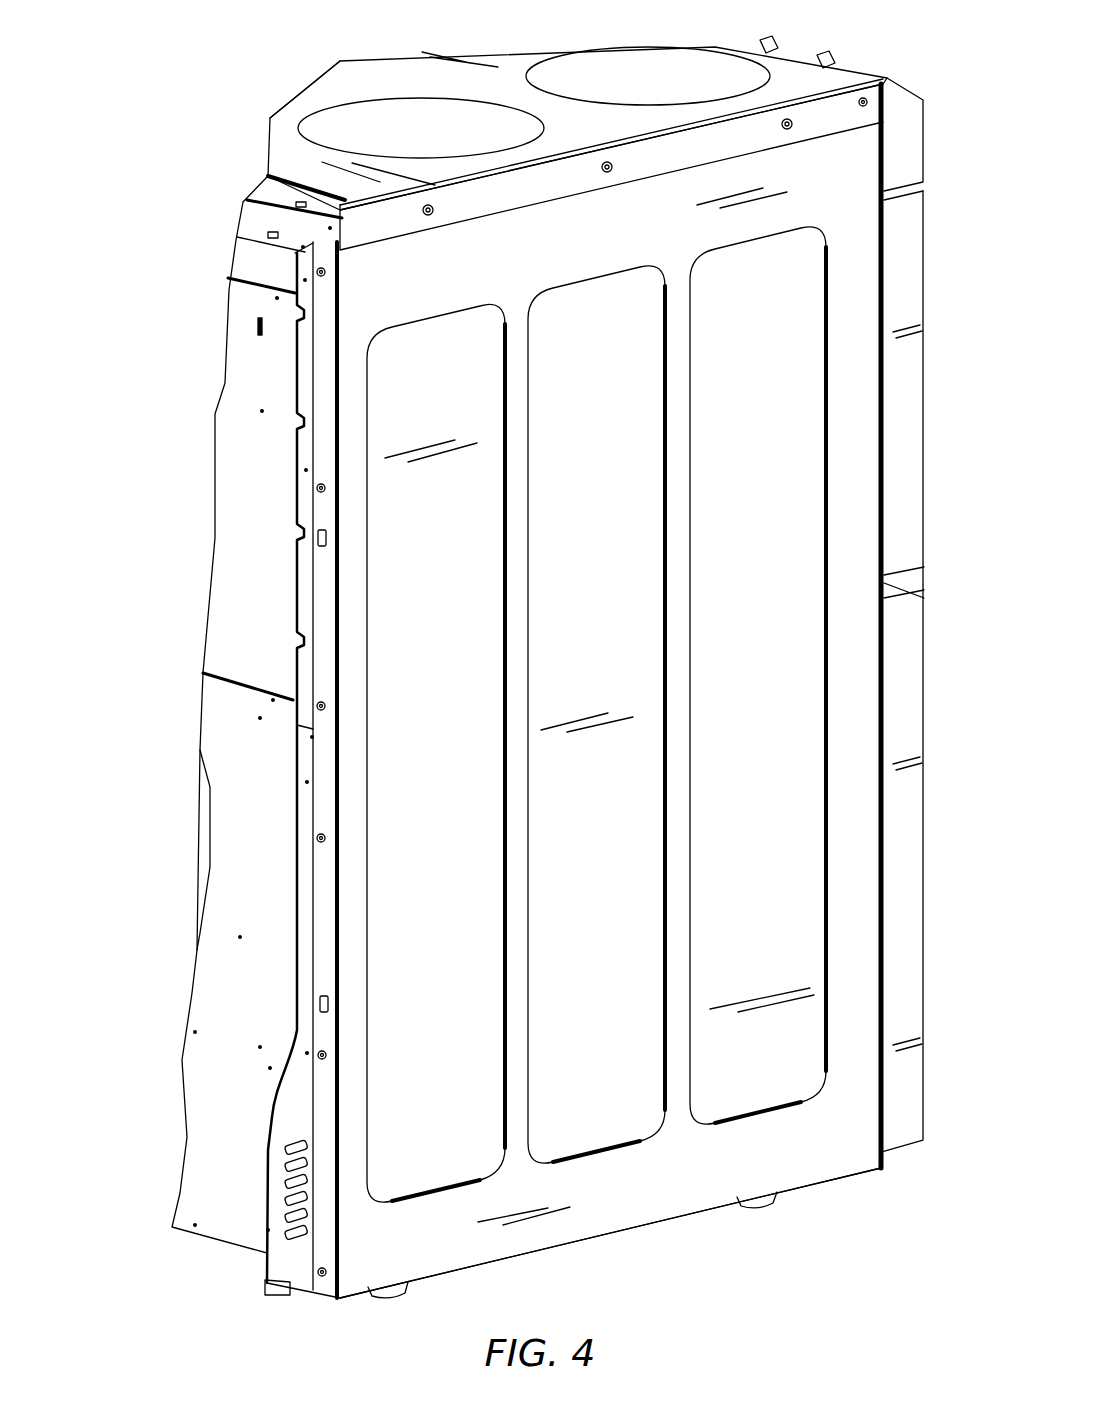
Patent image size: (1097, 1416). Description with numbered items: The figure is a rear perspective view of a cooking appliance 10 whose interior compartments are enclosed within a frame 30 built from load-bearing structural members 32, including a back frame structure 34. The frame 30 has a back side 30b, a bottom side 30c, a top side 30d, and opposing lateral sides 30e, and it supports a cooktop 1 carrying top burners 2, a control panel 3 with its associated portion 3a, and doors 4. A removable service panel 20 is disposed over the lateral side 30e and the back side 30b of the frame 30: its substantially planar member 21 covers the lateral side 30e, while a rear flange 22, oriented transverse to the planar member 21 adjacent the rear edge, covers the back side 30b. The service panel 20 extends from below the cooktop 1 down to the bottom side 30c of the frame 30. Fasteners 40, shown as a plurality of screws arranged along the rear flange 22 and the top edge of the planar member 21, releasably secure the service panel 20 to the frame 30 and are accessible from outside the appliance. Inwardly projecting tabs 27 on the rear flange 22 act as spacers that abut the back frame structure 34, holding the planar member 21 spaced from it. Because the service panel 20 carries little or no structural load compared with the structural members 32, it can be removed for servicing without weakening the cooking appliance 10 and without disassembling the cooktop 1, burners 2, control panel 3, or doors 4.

The cooktop 1 is at (787, 77).
The top burners 2 is at (577, 72).
The control panel 3 is at (902, 123).
The tabs 3a is at (840, 60).
The doors 4 is at (898, 344).
The cooking appliance 10 is at (500, 661).
The service panel 20 is at (744, 900).
The planar member 21 is at (628, 782).
The rear flange 22 is at (325, 337).
The tabs 27 is at (330, 540).
The frame 30 is at (186, 1192).
The back side 30b is at (297, 955).
The bottom side 30c is at (365, 1313).
The top side 30d is at (321, 69).
The lateral side 30e is at (870, 594).
The structural members 32 is at (282, 1163).
The back frame structure 34 is at (181, 1074).
The fasteners 40 is at (325, 275).